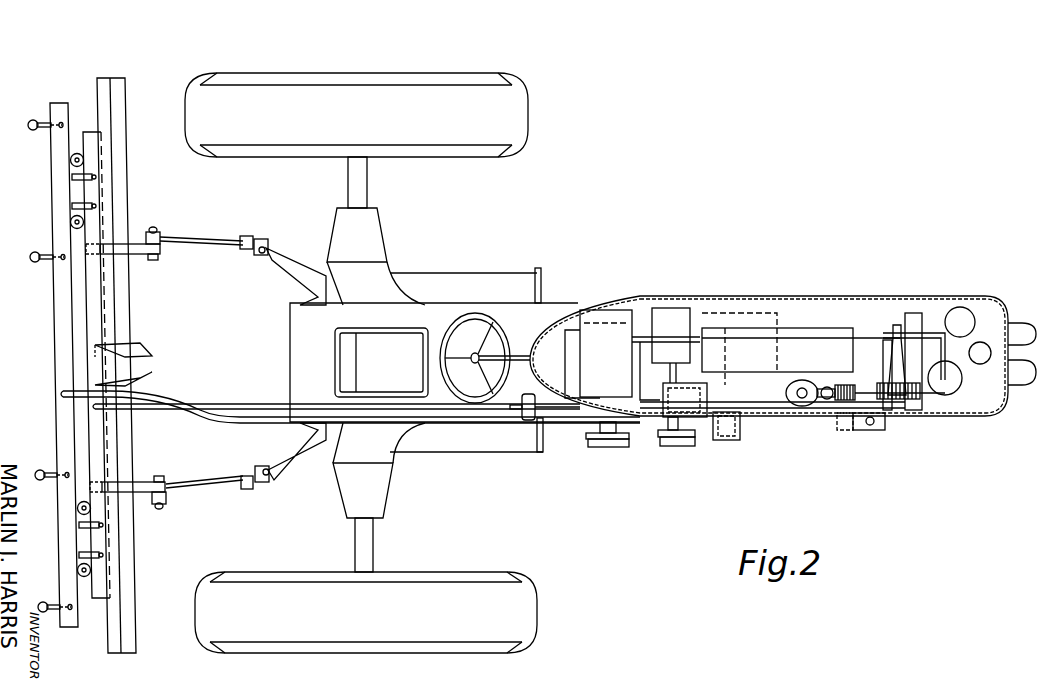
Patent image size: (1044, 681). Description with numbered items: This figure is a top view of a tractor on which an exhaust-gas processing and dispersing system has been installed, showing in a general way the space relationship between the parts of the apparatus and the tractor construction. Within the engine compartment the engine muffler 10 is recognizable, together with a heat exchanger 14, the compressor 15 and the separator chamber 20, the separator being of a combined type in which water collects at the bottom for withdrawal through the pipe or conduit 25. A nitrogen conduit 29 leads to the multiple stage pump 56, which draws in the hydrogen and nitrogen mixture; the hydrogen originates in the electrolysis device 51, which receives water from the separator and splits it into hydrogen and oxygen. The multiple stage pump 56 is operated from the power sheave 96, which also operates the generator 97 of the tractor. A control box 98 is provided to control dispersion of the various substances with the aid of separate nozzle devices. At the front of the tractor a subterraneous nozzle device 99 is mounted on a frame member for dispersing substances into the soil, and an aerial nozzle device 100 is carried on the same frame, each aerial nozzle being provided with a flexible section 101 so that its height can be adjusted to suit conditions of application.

The engine muffler 10 is at (800, 380).
The heat exchanger 14 is at (827, 386).
The compressor 15 is at (868, 431).
The separator chamber 20 is at (963, 388).
The pipe or conduit 25 is at (766, 404).
The nitrogen conduit 29 is at (796, 340).
The electrolysis device 51 is at (590, 358).
The multiple stage pump 56 is at (690, 386).
The power sheave 96 is at (607, 450).
The generator 97 is at (658, 428).
The control box 98 is at (522, 418).
The subterraneous nozzle device 99 is at (72, 180).
The aerial nozzle device 100 is at (33, 121).
The flexible section 101 is at (46, 130).